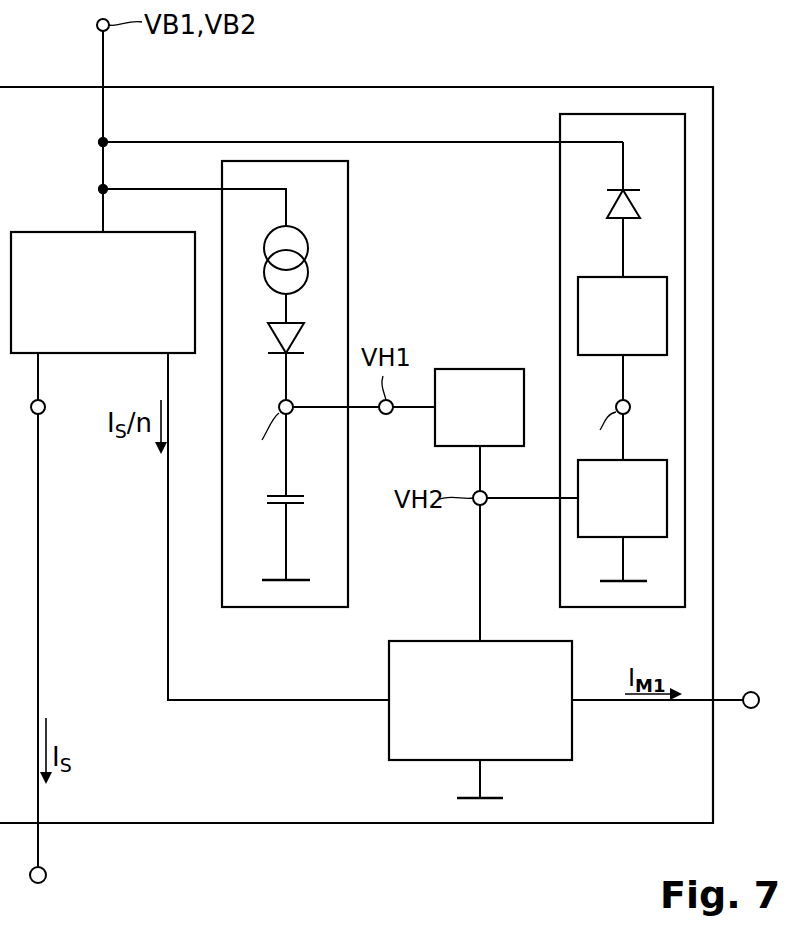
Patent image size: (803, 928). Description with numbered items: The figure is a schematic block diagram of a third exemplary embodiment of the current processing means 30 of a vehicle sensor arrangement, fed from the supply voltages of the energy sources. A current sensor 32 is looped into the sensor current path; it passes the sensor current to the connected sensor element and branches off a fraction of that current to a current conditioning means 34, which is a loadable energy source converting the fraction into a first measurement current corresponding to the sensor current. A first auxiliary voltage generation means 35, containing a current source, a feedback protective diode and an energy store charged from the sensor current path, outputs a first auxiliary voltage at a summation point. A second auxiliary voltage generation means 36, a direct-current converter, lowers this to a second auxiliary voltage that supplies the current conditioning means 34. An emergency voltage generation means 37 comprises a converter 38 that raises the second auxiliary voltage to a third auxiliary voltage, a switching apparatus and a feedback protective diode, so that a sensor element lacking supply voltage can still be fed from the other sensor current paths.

The current processing means 30 is at (453, 87).
The current sensor 32 is at (44, 232).
The current conditioning means 34 is at (389, 740).
The first auxiliary voltage generation means 35 is at (348, 224).
The second auxiliary voltage generation means 36 is at (480, 369).
The emergency voltage generation means 37 is at (594, 360).
The DC/DC converter 38 is at (578, 482).